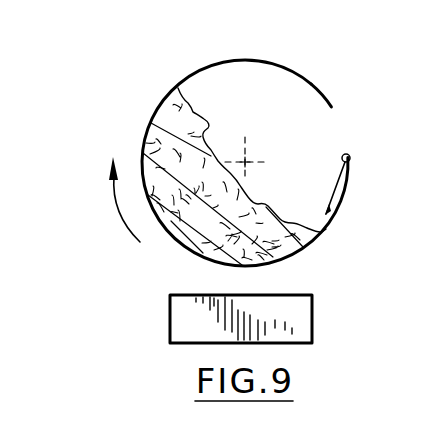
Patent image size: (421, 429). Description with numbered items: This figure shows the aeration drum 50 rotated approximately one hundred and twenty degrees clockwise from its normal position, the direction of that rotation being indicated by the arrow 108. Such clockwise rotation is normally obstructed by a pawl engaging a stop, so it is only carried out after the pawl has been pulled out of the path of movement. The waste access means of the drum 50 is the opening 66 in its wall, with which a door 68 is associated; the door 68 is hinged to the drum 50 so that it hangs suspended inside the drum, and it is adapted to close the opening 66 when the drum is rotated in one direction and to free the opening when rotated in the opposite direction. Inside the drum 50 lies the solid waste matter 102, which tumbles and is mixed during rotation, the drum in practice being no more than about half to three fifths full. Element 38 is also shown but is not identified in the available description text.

The aeration drum 50 is at (191, 64).
The opening 66 is at (336, 112).
The door 68 is at (330, 188).
The solid waste matter 102 is at (180, 130).
The arrow 108 is at (121, 205).
The indicator bar 38 is at (177, 303).